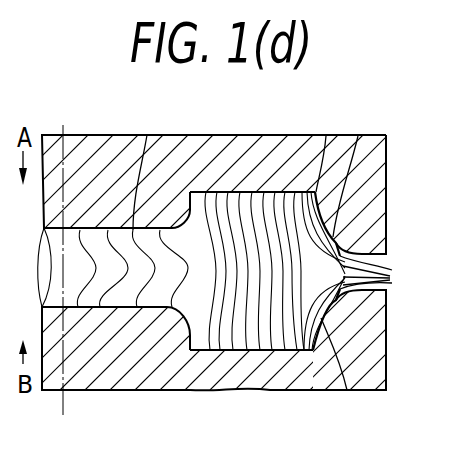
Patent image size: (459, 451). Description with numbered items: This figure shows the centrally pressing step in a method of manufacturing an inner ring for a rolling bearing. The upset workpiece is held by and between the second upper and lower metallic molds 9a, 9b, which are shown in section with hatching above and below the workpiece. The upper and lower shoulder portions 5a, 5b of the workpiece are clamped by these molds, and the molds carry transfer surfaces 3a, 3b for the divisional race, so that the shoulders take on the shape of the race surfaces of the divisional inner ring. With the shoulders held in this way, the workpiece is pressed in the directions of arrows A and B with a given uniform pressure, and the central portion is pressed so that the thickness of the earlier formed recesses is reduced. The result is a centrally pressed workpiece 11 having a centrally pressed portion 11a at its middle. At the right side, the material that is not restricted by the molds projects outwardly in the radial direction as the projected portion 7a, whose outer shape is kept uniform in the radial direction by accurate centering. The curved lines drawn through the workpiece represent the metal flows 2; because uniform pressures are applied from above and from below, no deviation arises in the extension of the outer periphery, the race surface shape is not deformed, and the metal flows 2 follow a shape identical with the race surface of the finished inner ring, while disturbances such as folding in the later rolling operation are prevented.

The centrally pressed portion 11a is at (147, 135).
The second upper metallic mold 9a is at (297, 150).
The upper shoulder portion 5a is at (326, 136).
The transfer surface 3a is at (358, 136).
The projected portion 7a is at (386, 255).
The metal flows 2 is at (388, 278).
The centrally pressed workpiece 11 is at (196, 345).
The second lower metallic mold 9b is at (247, 380).
The lower shoulder portion 5b is at (313, 352).
The transfer surface 3b is at (347, 390).